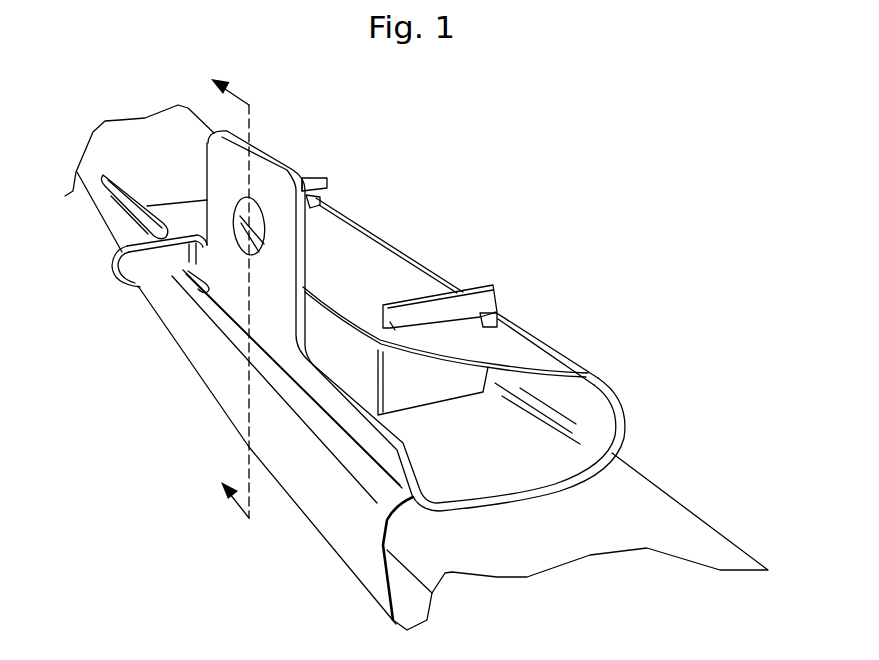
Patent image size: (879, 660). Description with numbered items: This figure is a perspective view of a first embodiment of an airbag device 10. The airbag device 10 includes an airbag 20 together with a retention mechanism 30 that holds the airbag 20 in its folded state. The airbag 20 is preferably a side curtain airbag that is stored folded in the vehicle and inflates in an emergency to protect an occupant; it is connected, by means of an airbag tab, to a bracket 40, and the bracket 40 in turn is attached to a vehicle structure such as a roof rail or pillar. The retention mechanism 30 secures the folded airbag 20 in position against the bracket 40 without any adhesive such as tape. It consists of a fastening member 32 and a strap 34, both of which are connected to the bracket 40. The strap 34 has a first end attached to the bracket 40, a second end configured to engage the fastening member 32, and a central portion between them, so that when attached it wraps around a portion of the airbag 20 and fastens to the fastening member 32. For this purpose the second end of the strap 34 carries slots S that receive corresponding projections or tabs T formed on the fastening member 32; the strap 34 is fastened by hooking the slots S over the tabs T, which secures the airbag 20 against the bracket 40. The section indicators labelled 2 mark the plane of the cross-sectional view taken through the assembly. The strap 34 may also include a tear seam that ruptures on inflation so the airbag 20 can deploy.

The airbag device 10 is at (456, 170).
The airbag 20 is at (648, 507).
The retention mechanism 30 is at (514, 271).
The fastening member 32 is at (440, 383).
The strap 34 is at (517, 350).
The bracket 40 is at (627, 432).
The section line 2- 2 is at (224, 284).
The tabs T is at (311, 182).
The slots S is at (330, 204).